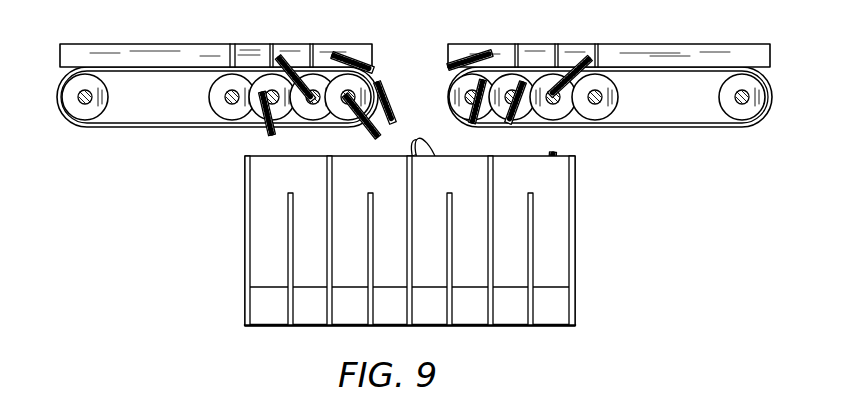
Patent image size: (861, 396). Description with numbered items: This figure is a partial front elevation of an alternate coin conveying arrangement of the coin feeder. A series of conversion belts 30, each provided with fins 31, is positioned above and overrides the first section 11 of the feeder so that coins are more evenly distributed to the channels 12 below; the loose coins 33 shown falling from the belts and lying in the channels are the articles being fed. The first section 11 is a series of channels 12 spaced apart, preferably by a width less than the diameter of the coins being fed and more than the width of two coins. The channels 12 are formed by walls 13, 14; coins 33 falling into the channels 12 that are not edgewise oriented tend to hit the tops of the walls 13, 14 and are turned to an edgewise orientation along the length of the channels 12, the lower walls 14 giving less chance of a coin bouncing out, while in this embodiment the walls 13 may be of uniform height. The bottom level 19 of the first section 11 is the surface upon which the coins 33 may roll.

The first section 11 is at (381, 241).
The channels 12 is at (387, 220).
The walls 13 is at (247, 215).
The lower walls 14 is at (287, 200).
The bottom level 19 is at (563, 287).
The conversion belts 30 is at (58, 86).
The fins 31 is at (348, 48).
The articles 33 is at (396, 116).